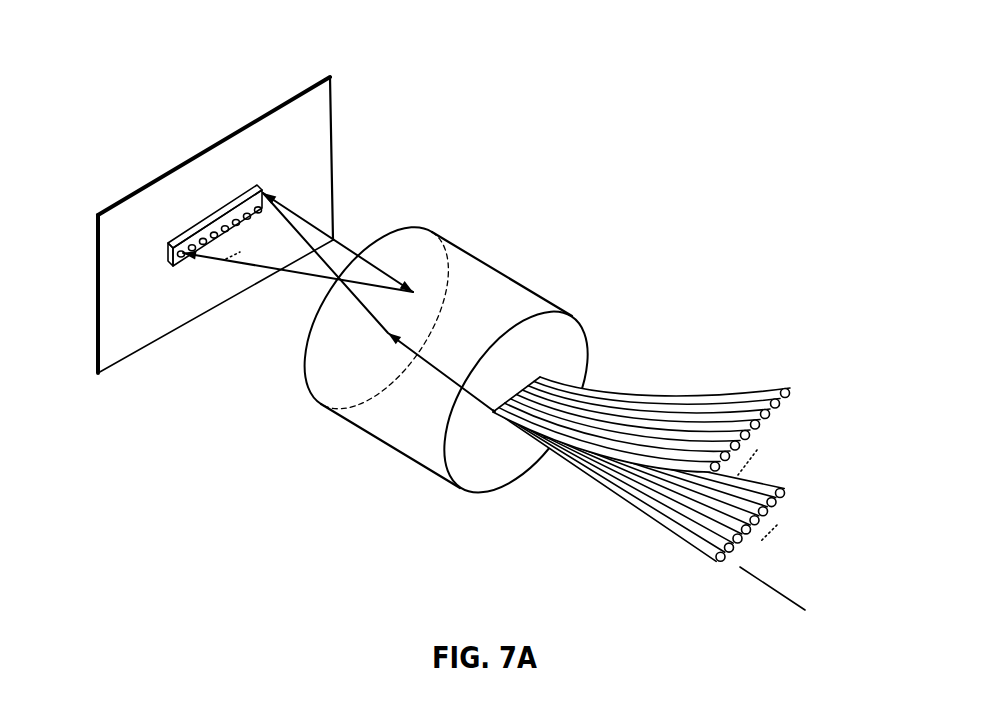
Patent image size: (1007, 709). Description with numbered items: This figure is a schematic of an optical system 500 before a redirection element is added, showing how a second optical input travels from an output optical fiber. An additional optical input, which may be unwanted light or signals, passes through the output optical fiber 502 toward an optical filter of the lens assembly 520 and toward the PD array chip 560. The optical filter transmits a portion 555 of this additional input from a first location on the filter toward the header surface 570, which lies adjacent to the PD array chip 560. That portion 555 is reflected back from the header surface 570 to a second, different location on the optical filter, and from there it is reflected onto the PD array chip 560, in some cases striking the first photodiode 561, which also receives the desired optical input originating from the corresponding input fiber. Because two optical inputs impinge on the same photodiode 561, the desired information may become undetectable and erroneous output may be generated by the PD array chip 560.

The optical system 500 is at (664, 134).
The output optical fiber 502 is at (695, 532).
The lens assembly 520 is at (461, 373).
The portion of additional optical input 555 is at (347, 247).
The PD array chip 560 is at (192, 183).
The first photodiode 561 is at (178, 250).
The header surface 570 is at (98, 320).